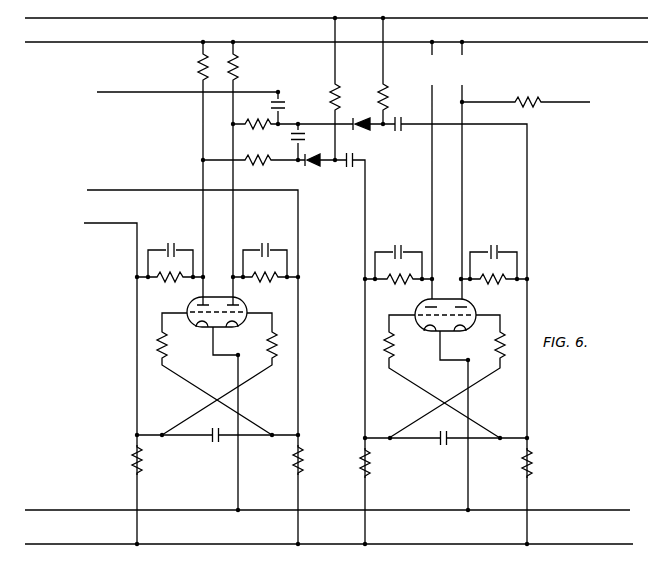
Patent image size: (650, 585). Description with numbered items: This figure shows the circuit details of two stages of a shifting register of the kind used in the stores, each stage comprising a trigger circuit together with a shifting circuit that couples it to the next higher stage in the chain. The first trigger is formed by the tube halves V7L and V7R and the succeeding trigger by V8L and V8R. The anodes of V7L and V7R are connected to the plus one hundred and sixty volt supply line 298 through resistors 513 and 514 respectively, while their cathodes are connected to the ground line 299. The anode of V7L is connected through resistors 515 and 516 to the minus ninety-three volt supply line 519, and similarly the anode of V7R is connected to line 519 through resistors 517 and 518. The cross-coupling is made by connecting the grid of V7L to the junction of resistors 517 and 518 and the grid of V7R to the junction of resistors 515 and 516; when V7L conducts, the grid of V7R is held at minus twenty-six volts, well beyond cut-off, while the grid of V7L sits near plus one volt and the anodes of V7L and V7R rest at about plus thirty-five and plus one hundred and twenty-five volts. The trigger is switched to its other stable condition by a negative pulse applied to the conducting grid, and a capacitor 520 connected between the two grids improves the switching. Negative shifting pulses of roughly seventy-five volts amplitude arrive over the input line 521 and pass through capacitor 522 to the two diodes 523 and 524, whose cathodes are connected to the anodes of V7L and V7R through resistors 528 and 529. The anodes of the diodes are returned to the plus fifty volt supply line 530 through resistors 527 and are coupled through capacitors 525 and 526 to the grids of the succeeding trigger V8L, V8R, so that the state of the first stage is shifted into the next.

The +160 volt supply line 298 is at (108, 40).
The ground line 299 is at (589, 496).
The resistor 513 is at (200, 71).
The resistor 514 is at (238, 73).
The resistor 515 is at (180, 281).
The resistor 516 is at (130, 462).
The resistor 517 is at (276, 279).
The resistor 518 is at (301, 457).
The −93 volt supply line 519 is at (434, 545).
The capacitor 520 is at (211, 438).
The input line 521 is at (129, 92).
The capacitor 522 is at (299, 123).
The diode 523 is at (364, 130).
The diode 524 is at (312, 164).
The capacitor 525 is at (399, 117).
The capacitor 526 is at (348, 169).
The resistors 527 is at (382, 90).
The resistor 528 is at (259, 127).
The resistor 529 is at (256, 165).
The +50 volt supply line 530 is at (489, 19).
The trigger circuit tube half V7L is at (188, 326).
The trigger circuit tube half V7R is at (243, 306).
The succeeding trigger tube half V8L is at (417, 328).
The succeeding trigger tube half V8R is at (472, 310).